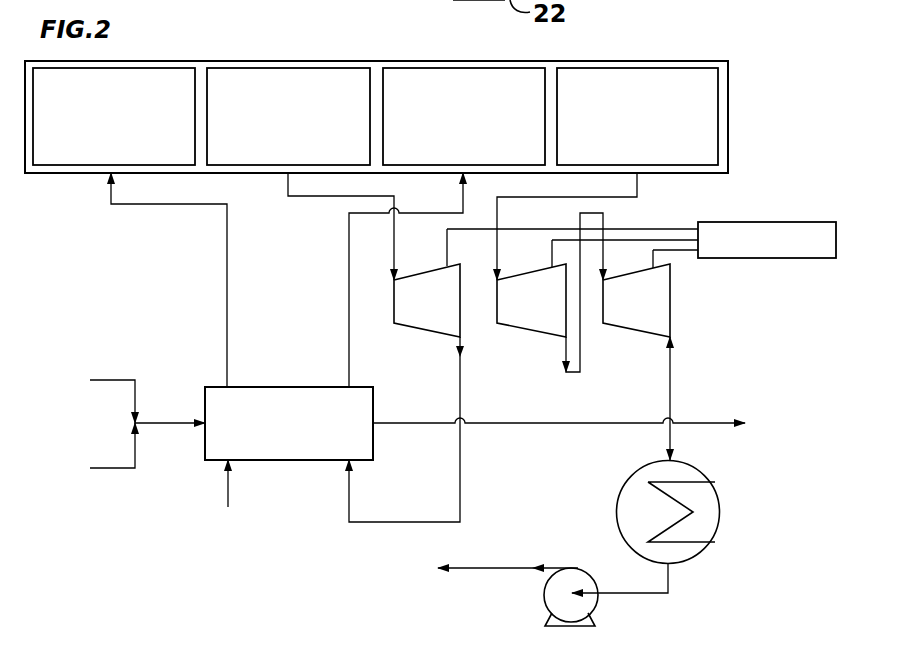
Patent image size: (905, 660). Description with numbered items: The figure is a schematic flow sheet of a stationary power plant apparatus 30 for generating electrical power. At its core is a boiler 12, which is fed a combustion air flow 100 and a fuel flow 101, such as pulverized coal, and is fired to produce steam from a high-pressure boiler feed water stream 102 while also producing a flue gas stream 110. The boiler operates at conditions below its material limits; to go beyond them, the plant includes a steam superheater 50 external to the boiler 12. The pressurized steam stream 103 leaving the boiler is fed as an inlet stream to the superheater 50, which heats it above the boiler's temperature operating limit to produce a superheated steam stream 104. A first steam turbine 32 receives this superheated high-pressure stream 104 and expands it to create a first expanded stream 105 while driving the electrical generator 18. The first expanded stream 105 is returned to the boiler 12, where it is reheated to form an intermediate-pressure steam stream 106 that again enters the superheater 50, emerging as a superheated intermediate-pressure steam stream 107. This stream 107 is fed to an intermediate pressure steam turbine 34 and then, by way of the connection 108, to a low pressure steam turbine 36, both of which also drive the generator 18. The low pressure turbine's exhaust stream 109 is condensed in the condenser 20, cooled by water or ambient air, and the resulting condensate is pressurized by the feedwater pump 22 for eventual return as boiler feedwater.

The boiler 12 is at (213, 388).
The electrical generator 18 is at (797, 222).
The condenser 20 is at (690, 548).
The feedwater pump 22 is at (585, 605).
The power plant apparatus 30 is at (783, 344).
The first steam turbine 32 is at (413, 320).
The intermediate pressure steam turbine 34 is at (517, 320).
The low pressure steam turbine 36 is at (622, 320).
The steam superheater 50 is at (720, 106).
The combustion air flow 100 is at (126, 391).
The fuel flow 101 is at (87, 461).
The high-pressure boiler feed water stream 102 is at (225, 510).
The pressurized steam stream 103 is at (167, 279).
The superheated steam stream 104 is at (343, 227).
The first expanded stream 105 is at (404, 445).
The reheated intermediate-pressure steam stream 106 is at (388, 279).
The superheated intermediate-pressure steam stream 107 is at (565, 227).
The IP turbine exhaust to LP turbine 108 is at (581, 306).
The exhaust stream 109 is at (689, 398).
The flue gas stream 110 is at (606, 432).